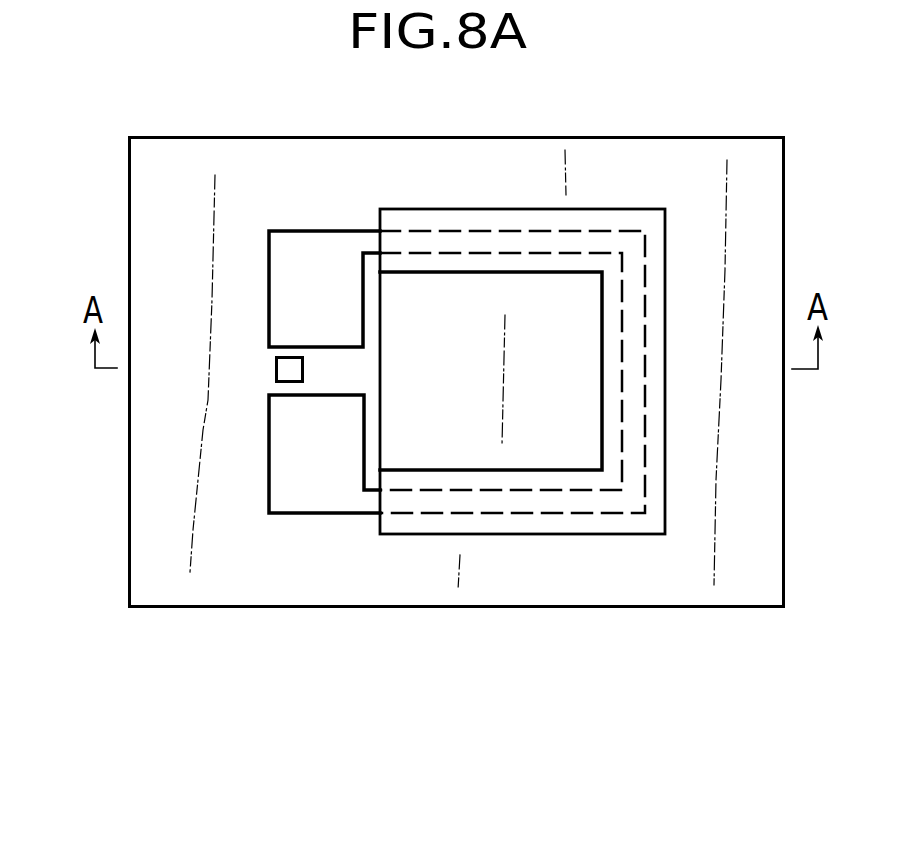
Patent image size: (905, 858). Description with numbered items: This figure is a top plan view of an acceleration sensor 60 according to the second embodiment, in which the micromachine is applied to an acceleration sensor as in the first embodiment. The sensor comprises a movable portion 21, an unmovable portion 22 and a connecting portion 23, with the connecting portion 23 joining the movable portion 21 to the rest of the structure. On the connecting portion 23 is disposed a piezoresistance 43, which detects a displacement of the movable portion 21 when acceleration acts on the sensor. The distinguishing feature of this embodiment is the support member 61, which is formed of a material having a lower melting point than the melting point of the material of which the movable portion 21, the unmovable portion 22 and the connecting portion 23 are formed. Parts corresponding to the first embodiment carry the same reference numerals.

The movable portion 21 is at (362, 459).
The unmovable portion 22 is at (673, 566).
The connecting portion 23 is at (317, 383).
The piezoresistance 43 is at (293, 355).
The acceleration sensor 60 is at (98, 230).
The support member 61 is at (602, 375).